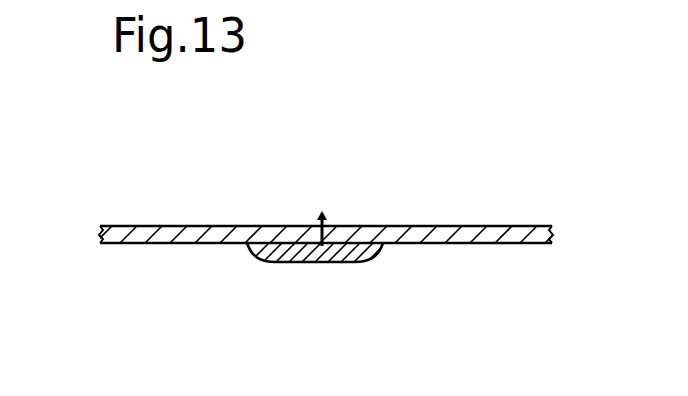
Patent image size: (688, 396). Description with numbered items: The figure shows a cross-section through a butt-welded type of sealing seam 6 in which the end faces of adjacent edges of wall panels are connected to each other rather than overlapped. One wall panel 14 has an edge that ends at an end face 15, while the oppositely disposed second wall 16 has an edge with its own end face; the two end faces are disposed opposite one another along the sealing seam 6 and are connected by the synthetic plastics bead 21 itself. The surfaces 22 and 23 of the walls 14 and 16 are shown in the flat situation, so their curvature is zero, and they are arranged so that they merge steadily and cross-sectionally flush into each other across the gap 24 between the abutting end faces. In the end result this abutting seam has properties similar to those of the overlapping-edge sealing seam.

The sealing seam 6 is at (313, 180).
The wall panel 14 is at (258, 226).
The end face 15 is at (308, 232).
The second wall 16 is at (342, 262).
The synthetic plastics bead 21 is at (300, 262).
The surface 22 is at (134, 226).
The surface 23 is at (457, 226).
The gap 24 is at (325, 212).